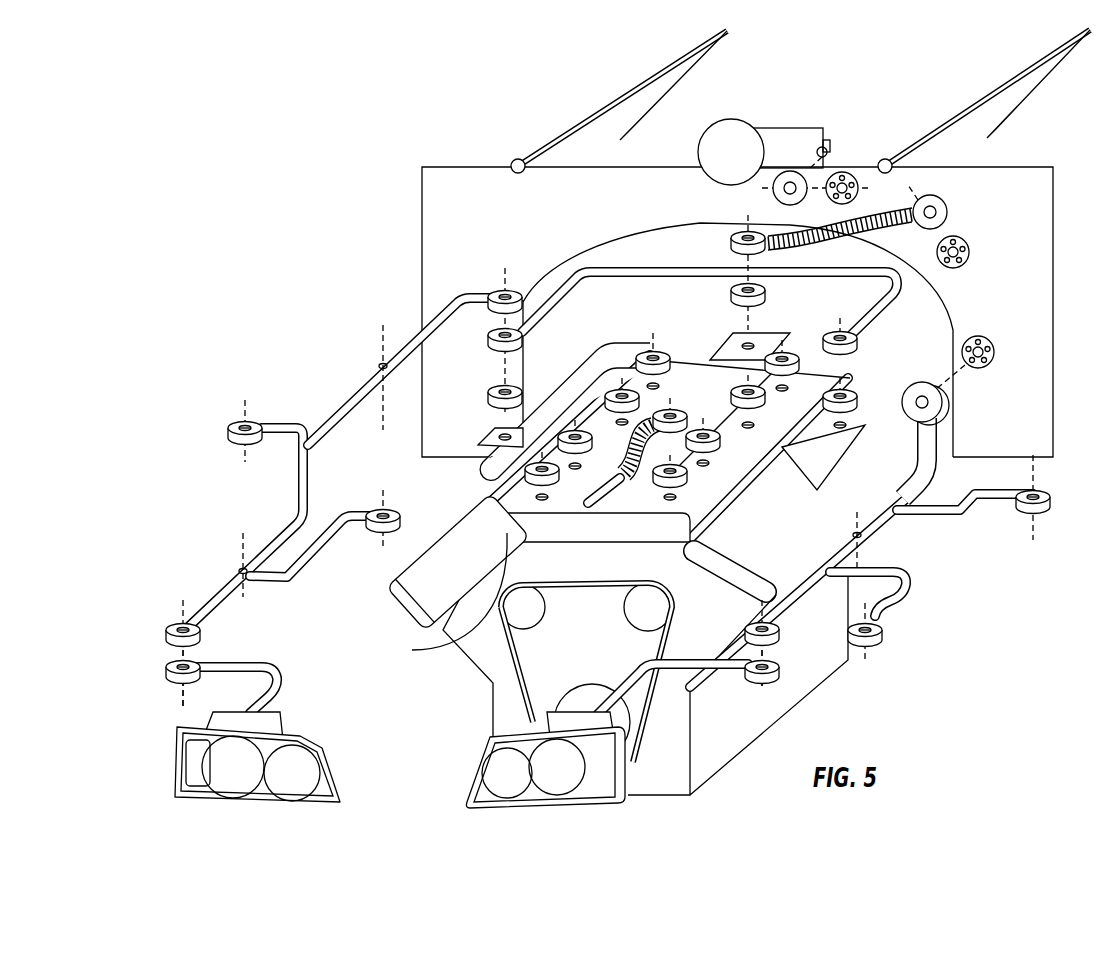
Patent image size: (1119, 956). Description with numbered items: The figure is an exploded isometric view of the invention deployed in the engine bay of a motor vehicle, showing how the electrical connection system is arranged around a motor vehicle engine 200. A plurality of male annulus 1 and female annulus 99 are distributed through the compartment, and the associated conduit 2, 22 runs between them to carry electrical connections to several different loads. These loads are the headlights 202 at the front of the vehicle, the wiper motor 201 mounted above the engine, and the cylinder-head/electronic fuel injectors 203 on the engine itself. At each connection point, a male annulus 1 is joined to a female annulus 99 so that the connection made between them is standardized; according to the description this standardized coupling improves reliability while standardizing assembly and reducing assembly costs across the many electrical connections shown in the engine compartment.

The male annulus 1 is at (497, 288).
The conduit 2 is at (223, 590).
The conduit 22 is at (547, 295).
The female annulus 99 is at (485, 338).
The motor vehicle engine 200 is at (694, 764).
The wiper motor 201 is at (748, 123).
The headlights 202 is at (307, 800).
The cylinder-head/electronic fuel injectors 203 is at (455, 632).